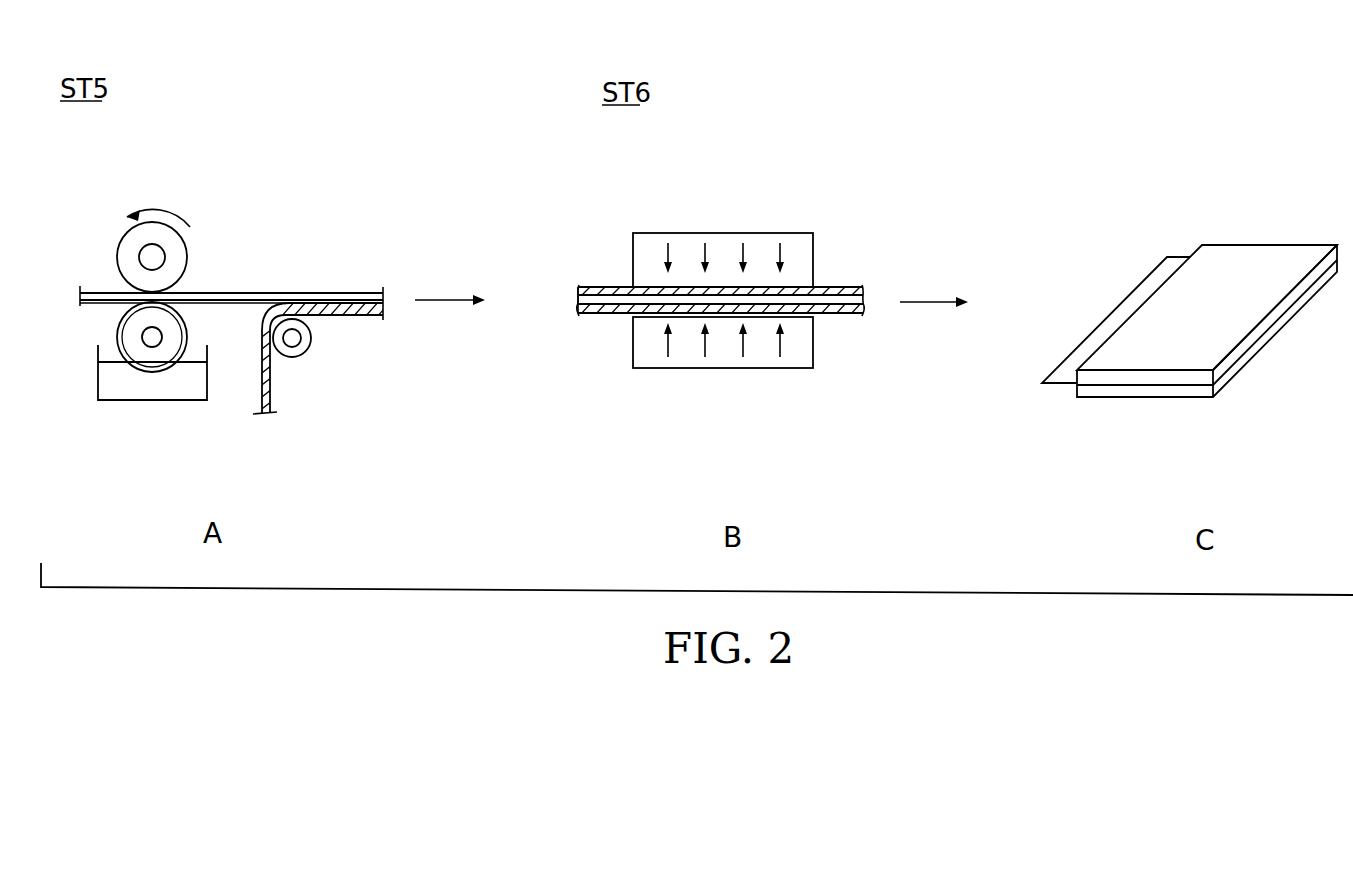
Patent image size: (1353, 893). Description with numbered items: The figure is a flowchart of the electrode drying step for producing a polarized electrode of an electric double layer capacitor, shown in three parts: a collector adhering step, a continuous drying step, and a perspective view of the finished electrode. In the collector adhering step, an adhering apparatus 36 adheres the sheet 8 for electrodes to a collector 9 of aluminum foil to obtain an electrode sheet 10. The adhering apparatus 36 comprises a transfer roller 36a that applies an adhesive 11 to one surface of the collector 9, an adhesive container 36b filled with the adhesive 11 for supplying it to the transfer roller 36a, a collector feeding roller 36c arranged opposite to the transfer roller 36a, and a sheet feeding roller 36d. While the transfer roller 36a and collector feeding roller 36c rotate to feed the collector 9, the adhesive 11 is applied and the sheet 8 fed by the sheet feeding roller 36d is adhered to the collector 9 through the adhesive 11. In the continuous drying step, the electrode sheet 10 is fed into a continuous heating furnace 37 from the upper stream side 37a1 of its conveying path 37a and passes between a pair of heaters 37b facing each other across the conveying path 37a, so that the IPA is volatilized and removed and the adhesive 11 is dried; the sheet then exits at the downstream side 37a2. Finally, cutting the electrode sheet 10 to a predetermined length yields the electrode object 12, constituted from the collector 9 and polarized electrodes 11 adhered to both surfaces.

The sheet for electrodes 8 is at (270, 400).
The collector 9 is at (288, 293).
The electrode sheet 10 is at (582, 287).
The adhesive 11 is at (227, 307).
The electrode object 12 is at (1240, 236).
The adhering apparatus 36 is at (212, 208).
The transfer roller 36a is at (127, 327).
The adhesive container 36b is at (212, 383).
The collector feeding roller 36c is at (183, 262).
The sheet feeding roller 36d is at (307, 350).
The continuous heating furnace 37 is at (726, 292).
The conveying path 37a is at (624, 274).
The upper stream side 37a1 is at (622, 333).
The second pressing plate 37a2 is at (823, 329).
The heaters 37b is at (655, 233).